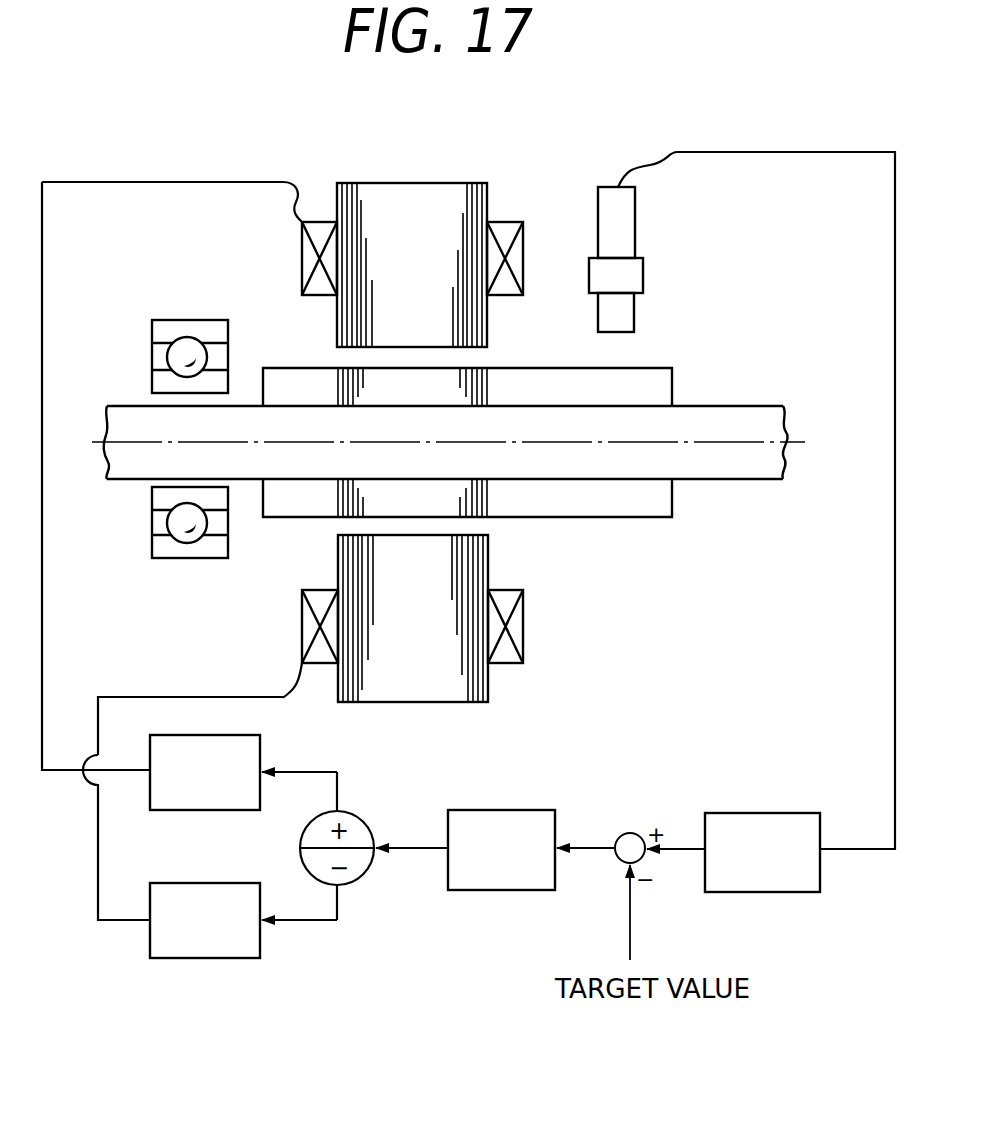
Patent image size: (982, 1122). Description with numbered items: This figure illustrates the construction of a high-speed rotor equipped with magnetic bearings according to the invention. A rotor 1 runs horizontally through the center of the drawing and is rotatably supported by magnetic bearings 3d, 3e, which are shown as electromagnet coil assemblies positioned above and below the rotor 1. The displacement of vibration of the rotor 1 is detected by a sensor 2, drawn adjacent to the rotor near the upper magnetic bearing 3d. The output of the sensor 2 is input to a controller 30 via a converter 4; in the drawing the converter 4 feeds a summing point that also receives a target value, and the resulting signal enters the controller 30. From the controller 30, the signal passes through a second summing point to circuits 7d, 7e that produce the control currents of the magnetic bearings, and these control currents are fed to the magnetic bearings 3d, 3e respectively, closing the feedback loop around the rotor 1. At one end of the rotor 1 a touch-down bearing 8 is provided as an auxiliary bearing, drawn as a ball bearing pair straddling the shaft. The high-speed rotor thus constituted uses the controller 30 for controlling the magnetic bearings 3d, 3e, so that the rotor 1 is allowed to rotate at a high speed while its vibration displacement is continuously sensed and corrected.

The rotor 1 is at (742, 406).
The sensor 2 is at (638, 207).
The magnetic bearing 3d is at (487, 196).
The magnetic bearing 3e is at (488, 692).
The converter 4 is at (792, 813).
The circuit 7d is at (170, 810).
The circuit 7e is at (178, 958).
The touch-down bearing 8 is at (168, 320).
The controller 30 is at (540, 810).